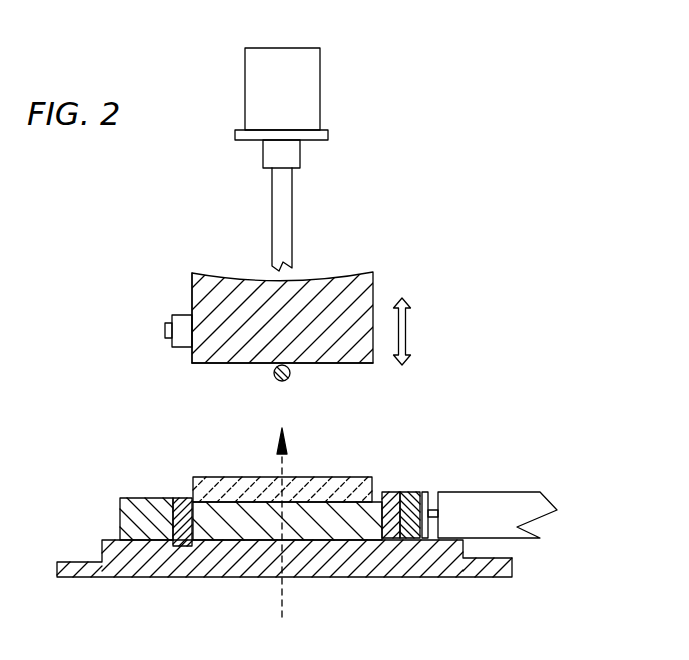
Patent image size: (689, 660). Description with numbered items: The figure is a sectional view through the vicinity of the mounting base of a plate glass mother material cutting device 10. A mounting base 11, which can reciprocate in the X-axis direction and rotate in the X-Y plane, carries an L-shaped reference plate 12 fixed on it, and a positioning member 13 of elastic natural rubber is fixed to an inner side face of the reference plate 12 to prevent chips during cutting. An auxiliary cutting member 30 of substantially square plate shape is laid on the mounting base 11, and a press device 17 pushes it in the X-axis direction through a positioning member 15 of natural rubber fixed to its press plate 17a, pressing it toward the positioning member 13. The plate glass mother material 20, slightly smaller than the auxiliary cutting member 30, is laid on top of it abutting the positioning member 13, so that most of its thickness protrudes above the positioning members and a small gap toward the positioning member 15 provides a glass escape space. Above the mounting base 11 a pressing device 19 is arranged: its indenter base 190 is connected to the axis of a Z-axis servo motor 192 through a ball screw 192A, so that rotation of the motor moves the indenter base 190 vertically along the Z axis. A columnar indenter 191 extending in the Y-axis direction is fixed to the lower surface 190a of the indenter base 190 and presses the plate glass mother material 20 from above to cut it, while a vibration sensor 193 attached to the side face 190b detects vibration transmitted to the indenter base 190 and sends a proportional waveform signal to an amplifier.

The plate glass mother material cutting device 10 is at (490, 140).
The pressing device 19 is at (395, 220).
The Z-axis servo motor 192 is at (312, 88).
The ball screw 192A is at (287, 220).
The indenter base 190 is at (373, 283).
The lower surface of the indenter base 190a is at (242, 363).
The side face of the indenter base 190b is at (190, 355).
The vibration sensor 193 is at (180, 315).
The indenter 191 is at (290, 375).
The plate glass mother material 20 is at (248, 476).
The auxiliary cutting member 30 is at (243, 525).
The reference plate 12 is at (137, 497).
The positioning member 13 is at (185, 496).
The mounting base 11 is at (143, 577).
The positioning member 15 is at (395, 540).
The press plate 17a is at (408, 492).
The press device 17 is at (477, 492).